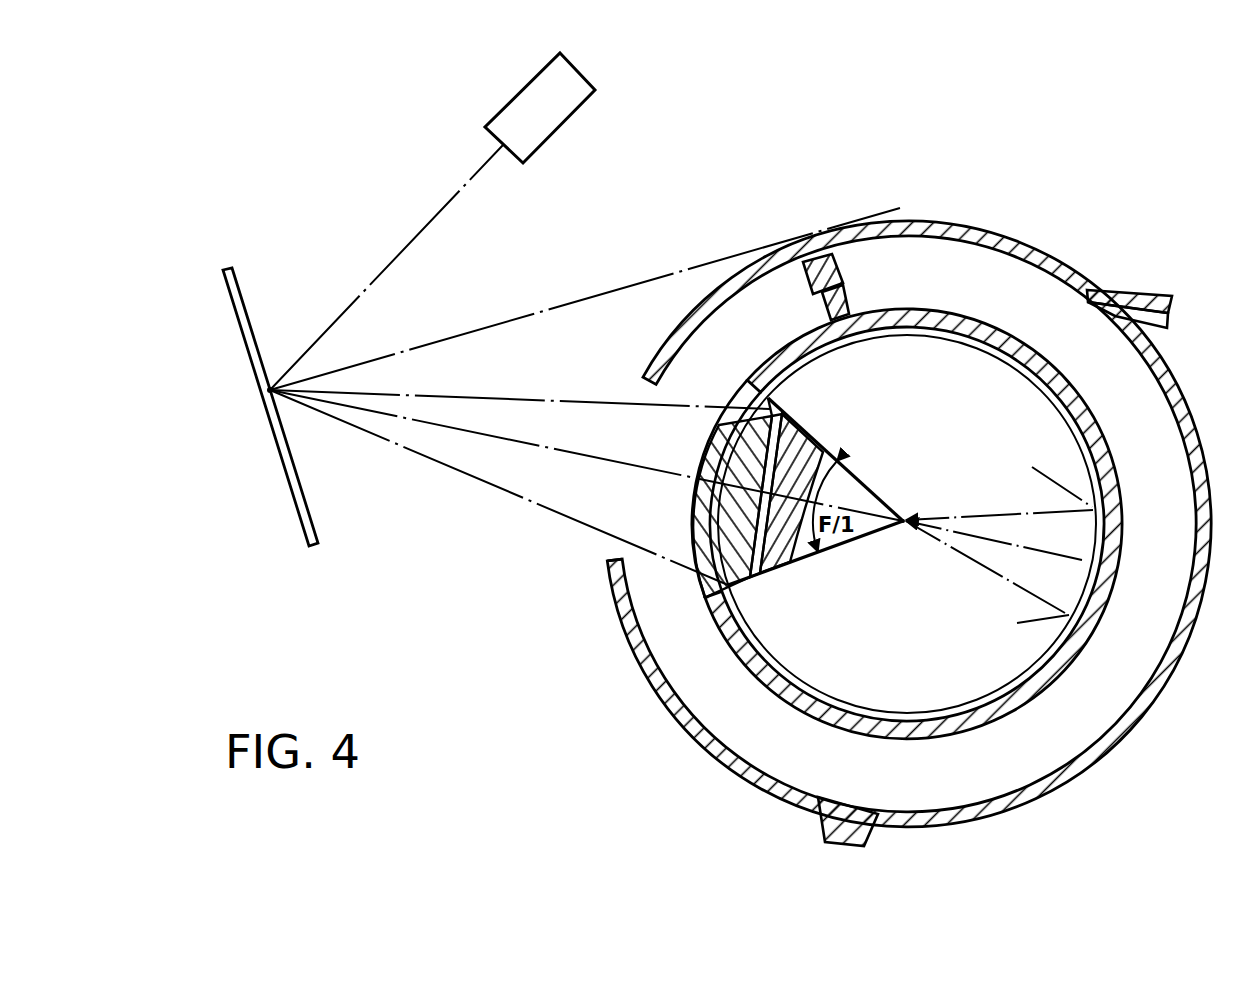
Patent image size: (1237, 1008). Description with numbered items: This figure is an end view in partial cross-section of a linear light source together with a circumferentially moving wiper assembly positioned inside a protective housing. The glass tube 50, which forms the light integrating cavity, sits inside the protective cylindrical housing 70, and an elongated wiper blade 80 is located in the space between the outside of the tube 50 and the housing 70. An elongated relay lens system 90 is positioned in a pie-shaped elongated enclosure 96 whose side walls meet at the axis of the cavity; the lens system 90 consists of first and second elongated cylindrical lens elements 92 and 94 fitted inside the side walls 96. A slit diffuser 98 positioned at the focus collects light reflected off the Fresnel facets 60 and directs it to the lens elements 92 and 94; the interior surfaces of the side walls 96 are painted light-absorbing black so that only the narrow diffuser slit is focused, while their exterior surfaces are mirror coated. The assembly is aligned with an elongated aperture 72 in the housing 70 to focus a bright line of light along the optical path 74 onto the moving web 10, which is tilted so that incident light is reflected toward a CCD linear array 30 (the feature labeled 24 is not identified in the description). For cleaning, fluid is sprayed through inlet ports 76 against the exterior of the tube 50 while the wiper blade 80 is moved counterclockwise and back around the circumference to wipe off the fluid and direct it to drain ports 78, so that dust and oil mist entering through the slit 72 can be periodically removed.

The moving web 10 is at (290, 487).
The beam reflection point 24 is at (276, 402).
The CCD linear array 30 is at (585, 107).
The glass tube 50 is at (1040, 668).
The Fresnel facets 60 is at (1087, 597).
The protective cylindrical housing 70 is at (617, 630).
The elongated aperture 72 is at (601, 538).
The optical path 74 is at (447, 463).
The inlet port 76 is at (1147, 289).
The drain port 78 is at (826, 838).
The wiper blade 80 is at (843, 266).
The relay lens system 90 is at (812, 574).
The first elongated cylindrical lens element 92 is at (708, 562).
The second elongated cylindrical lens element 94 is at (762, 565).
The pie-shaped elongated enclosure 96 is at (862, 540).
The slit diffuser 98 is at (905, 528).